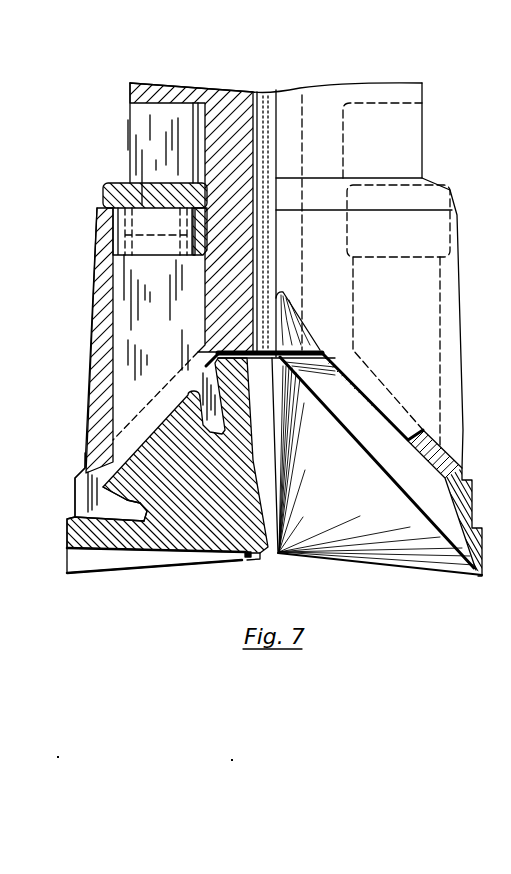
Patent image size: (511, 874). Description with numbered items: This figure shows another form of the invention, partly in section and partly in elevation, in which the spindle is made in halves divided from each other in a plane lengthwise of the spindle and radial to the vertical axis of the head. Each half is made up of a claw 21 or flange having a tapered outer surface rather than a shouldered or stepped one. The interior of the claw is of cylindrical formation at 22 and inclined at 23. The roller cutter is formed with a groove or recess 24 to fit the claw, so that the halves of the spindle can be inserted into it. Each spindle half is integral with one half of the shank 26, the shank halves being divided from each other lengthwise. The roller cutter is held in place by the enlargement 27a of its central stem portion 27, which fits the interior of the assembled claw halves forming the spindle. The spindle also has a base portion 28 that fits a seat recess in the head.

The claw 21 is at (100, 480).
The cylindrical interior portion 22 is at (132, 503).
The inclined interior portion 23 is at (110, 489).
The groove or recess 24 is at (170, 514).
The shank 26 is at (137, 275).
The central stem portion 27 is at (135, 430).
The enlargement 27a is at (103, 487).
The base portion 28 is at (178, 372).